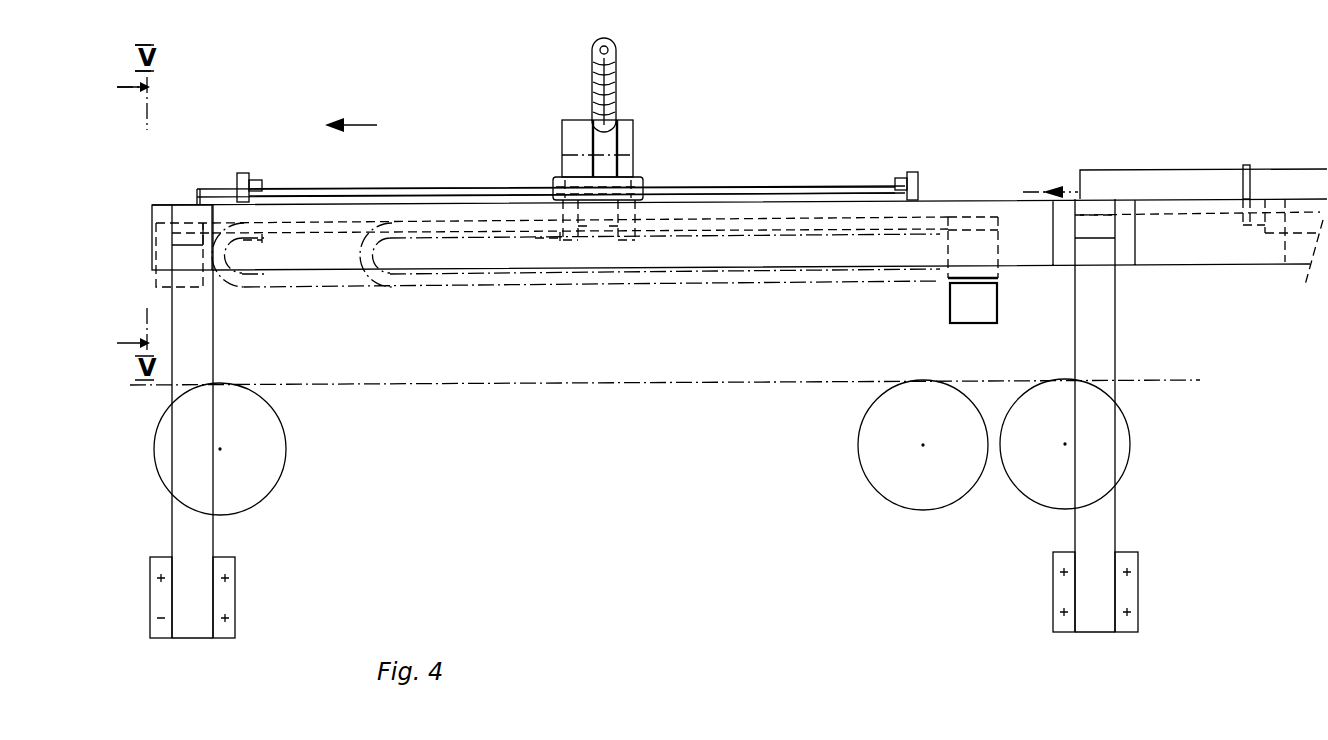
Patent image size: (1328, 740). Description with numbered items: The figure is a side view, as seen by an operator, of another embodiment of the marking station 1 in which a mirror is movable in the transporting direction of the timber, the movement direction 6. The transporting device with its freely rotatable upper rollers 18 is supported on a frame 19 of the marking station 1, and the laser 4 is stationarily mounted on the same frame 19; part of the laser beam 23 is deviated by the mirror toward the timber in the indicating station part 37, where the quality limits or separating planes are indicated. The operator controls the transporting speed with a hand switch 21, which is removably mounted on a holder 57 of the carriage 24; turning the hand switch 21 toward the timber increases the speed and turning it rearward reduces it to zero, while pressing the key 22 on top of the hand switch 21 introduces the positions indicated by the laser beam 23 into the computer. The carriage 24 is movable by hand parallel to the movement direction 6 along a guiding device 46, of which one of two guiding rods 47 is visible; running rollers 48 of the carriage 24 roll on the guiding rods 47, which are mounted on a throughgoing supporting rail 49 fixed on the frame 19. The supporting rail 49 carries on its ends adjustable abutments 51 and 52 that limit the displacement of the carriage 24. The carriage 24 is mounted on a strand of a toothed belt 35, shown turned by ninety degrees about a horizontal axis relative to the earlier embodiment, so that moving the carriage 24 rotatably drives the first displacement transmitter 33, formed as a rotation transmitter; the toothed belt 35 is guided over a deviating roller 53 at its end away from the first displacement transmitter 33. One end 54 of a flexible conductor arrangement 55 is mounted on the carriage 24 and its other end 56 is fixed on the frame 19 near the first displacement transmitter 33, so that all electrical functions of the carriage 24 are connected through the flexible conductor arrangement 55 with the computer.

The marking station 1 is at (842, 98).
The laser 4 is at (1170, 183).
The movement direction 6 is at (377, 124).
The upper rollers 18 is at (270, 494).
The frame 19 is at (1122, 310).
The hand switch 21 is at (611, 70).
The key 22 is at (613, 45).
The laser beam 23 is at (1060, 186).
The carriage 24 is at (648, 176).
The first displacement transmitter 33 is at (1002, 305).
The toothed belt 35 is at (360, 216).
The indicating station part 37 is at (645, 125).
The guiding device 46 is at (730, 187).
The guiding rods 47 is at (800, 188).
The running rollers 48 is at (555, 188).
The supporting rail 49 is at (473, 195).
The adjustable abutment 51 is at (264, 184).
The adjustable abutment 52 is at (896, 182).
The deviating roller 53 is at (165, 230).
The end of flexible conductor arrangement 54 is at (258, 230).
The flexible conductor arrangement 55 is at (366, 290).
The other end of flexible conductor arrangement 56 is at (942, 284).
The holder 57 is at (617, 100).